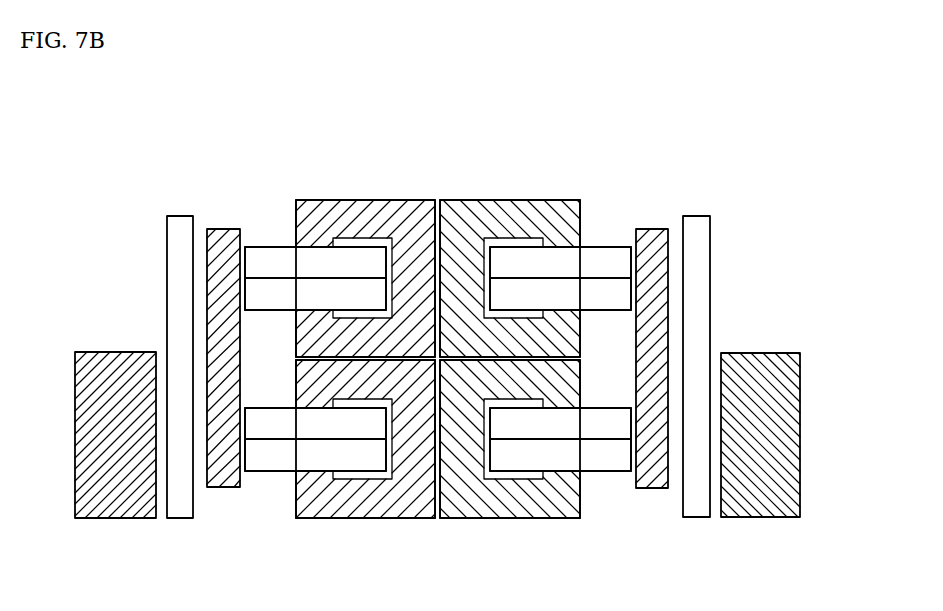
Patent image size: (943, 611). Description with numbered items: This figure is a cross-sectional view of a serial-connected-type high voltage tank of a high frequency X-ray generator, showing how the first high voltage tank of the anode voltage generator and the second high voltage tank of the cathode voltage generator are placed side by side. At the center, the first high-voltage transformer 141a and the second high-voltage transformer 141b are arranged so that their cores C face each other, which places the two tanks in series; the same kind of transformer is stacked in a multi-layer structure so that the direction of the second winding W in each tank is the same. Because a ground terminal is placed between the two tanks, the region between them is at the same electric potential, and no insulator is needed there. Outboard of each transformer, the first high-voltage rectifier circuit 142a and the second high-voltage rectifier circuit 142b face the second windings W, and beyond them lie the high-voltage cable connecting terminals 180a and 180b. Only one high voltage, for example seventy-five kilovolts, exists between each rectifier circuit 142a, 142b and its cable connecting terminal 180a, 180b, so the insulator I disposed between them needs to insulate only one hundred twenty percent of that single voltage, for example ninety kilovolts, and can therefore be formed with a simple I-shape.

The first high-voltage transformer 141a is at (368, 144).
The second high-voltage transformer 141b is at (609, 144).
The second winding W is at (272, 258).
The core C is at (368, 216).
The insulator I is at (183, 222).
The first high-voltage rectifier circuit 142a is at (222, 486).
The second high-voltage rectifier circuit 142b is at (655, 484).
The high-voltage cable connecting terminal 180a is at (108, 362).
The high-voltage cable connecting terminal 180b is at (772, 362).